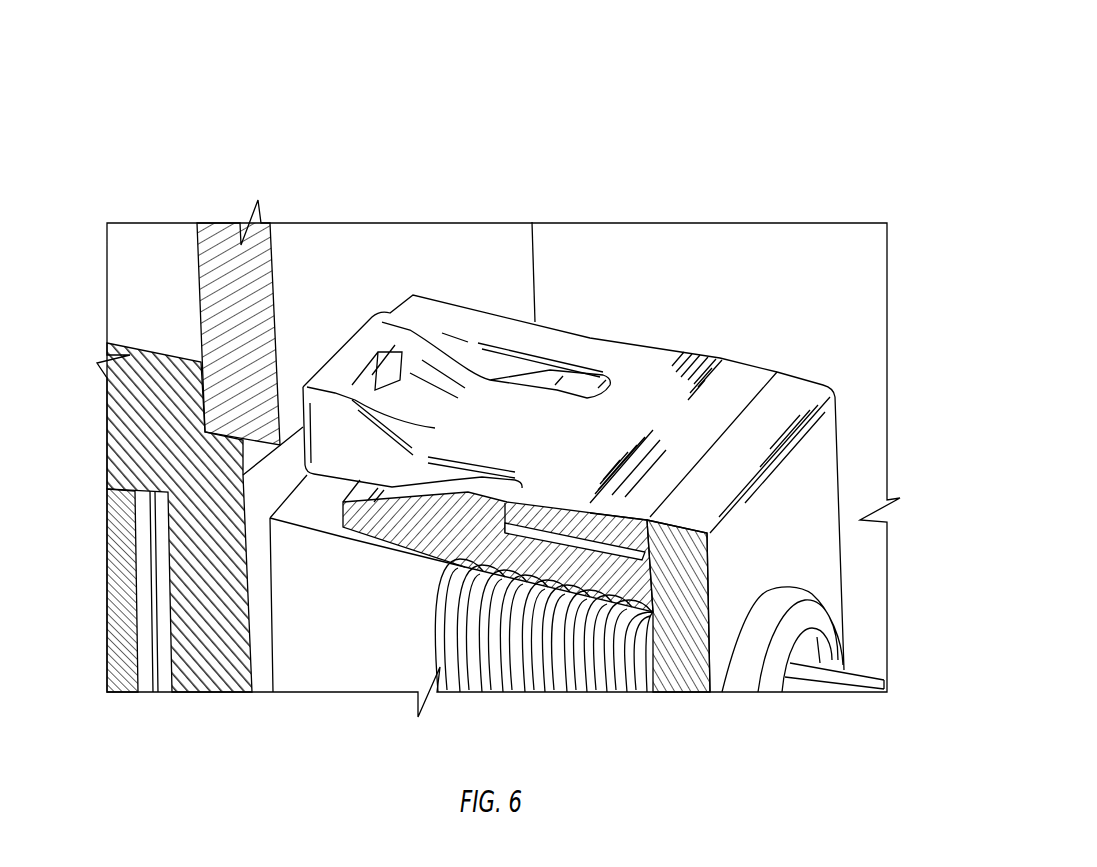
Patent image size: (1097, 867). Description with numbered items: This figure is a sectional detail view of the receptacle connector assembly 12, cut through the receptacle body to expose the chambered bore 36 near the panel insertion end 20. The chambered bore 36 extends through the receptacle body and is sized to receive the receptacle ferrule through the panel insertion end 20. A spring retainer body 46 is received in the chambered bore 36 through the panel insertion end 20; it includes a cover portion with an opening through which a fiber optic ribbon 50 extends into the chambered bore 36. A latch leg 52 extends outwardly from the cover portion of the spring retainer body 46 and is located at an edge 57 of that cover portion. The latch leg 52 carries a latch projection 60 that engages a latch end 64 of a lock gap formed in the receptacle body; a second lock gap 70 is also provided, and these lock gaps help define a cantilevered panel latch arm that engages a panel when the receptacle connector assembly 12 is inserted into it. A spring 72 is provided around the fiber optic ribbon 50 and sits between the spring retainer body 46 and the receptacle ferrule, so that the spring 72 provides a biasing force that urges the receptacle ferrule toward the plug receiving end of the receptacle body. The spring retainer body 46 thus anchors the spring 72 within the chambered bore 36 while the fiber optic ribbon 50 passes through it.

The receptacle connector assembly 12 is at (630, 135).
The panel insertion end 20 is at (753, 400).
The chambered bore 36 is at (338, 662).
The spring retainer body 46 is at (852, 417).
The fiber optic ribbon 50 is at (862, 690).
The latch leg 52 is at (572, 548).
The edge of cover portion 57 is at (802, 390).
The latch projection 60 is at (448, 520).
The latch end 64 is at (613, 387).
The lock gap 70 is at (413, 400).
The spring 72 is at (607, 680).